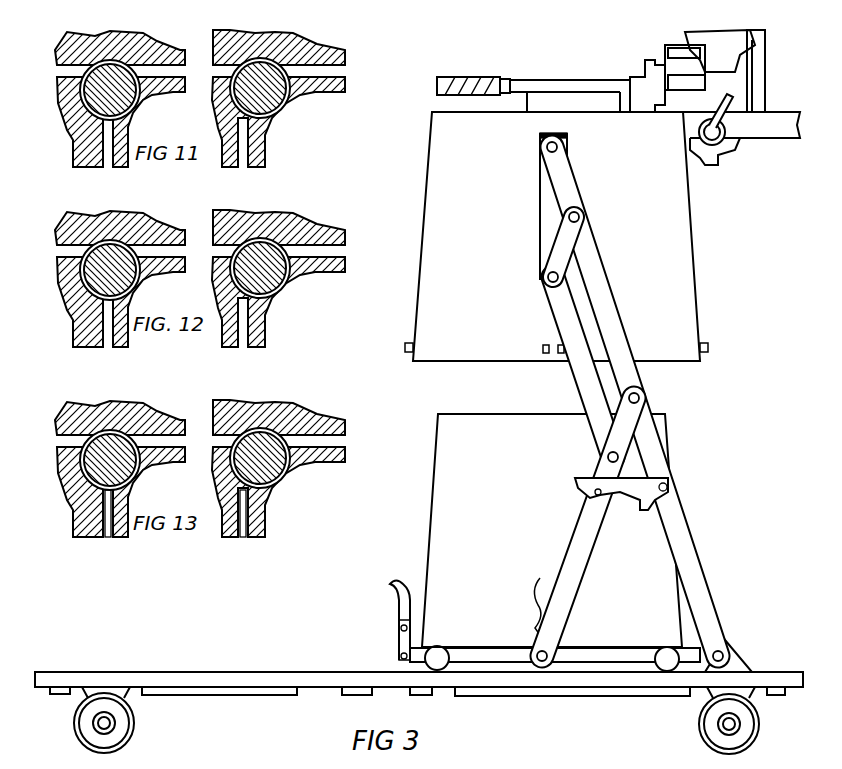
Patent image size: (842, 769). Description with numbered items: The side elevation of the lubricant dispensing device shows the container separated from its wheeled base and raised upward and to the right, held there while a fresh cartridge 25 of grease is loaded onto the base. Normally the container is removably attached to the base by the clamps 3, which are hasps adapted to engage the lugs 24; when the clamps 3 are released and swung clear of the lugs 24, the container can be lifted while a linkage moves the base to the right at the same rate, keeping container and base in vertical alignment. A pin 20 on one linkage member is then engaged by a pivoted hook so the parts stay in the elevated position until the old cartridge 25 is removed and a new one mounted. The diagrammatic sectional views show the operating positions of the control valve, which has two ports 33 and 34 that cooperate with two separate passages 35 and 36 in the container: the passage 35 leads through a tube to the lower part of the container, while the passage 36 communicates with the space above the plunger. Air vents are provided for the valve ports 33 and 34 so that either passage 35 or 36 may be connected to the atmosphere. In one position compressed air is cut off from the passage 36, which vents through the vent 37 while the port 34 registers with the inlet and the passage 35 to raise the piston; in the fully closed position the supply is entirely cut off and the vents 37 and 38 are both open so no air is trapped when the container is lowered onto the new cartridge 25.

In FIG. 3, the clamps 3 is at (403, 605).
In FIG. 3, the pin 20 is at (600, 494).
In FIG. 3, the lugs 24 is at (705, 349).
In FIG. 3, the cartridge 25 is at (436, 528).
In FIG. 11, the port 33 is at (104, 66).
In FIG. 12, the port 33 is at (100, 246).
In FIG. 13, the port 33 is at (82, 466).
In FIG. 11, the port 34 is at (275, 100).
In FIG. 12, the port 34 is at (260, 244).
In FIG. 13, the port 34 is at (232, 468).
In FIG. 11, the passage 35 is at (212, 68).
In FIG. 12, the passage 35 is at (208, 252).
In FIG. 13, the passage 35 is at (203, 440).
In FIG. 11, the passage 36 is at (58, 70).
In FIG. 12, the passage 36 is at (62, 252).
In FIG. 13, the passage 36 is at (58, 436).
In FIG. 13, the air vent 37 is at (107, 538).
In FIG. 13, the vent 38 is at (240, 527).